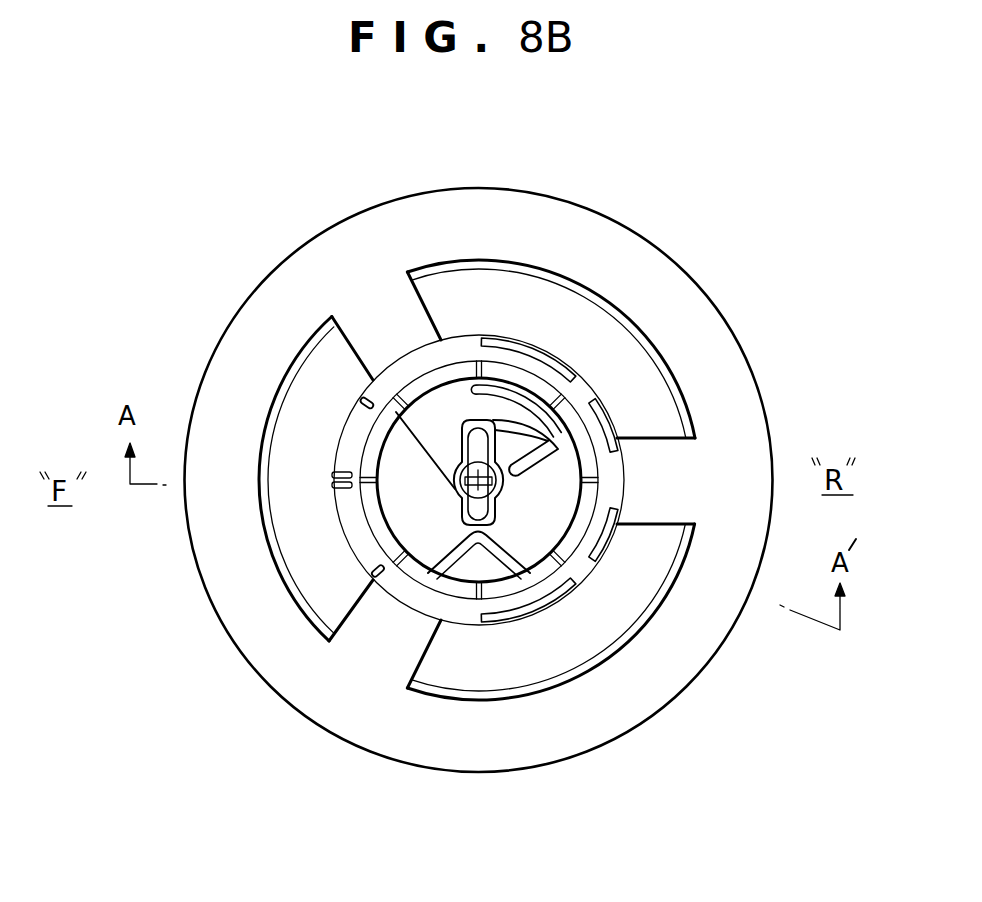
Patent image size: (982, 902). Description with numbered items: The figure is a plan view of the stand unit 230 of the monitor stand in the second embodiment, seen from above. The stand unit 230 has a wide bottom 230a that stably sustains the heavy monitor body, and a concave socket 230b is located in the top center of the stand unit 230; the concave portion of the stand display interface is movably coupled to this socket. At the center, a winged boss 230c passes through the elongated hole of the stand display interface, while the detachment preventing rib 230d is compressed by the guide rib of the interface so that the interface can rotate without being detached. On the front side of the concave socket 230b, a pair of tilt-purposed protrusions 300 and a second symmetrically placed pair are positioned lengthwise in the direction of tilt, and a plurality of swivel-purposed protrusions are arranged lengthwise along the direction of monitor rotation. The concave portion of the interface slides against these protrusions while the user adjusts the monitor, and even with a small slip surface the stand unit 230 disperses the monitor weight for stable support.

The stand unit 230 is at (720, 304).
The wide bottom 230a is at (243, 348).
The concave socket 230b is at (357, 540).
The winged boss 230c is at (487, 528).
The detachment preventing rib 230d is at (560, 452).
The tilt-purposed protrusions 300 is at (225, 535).